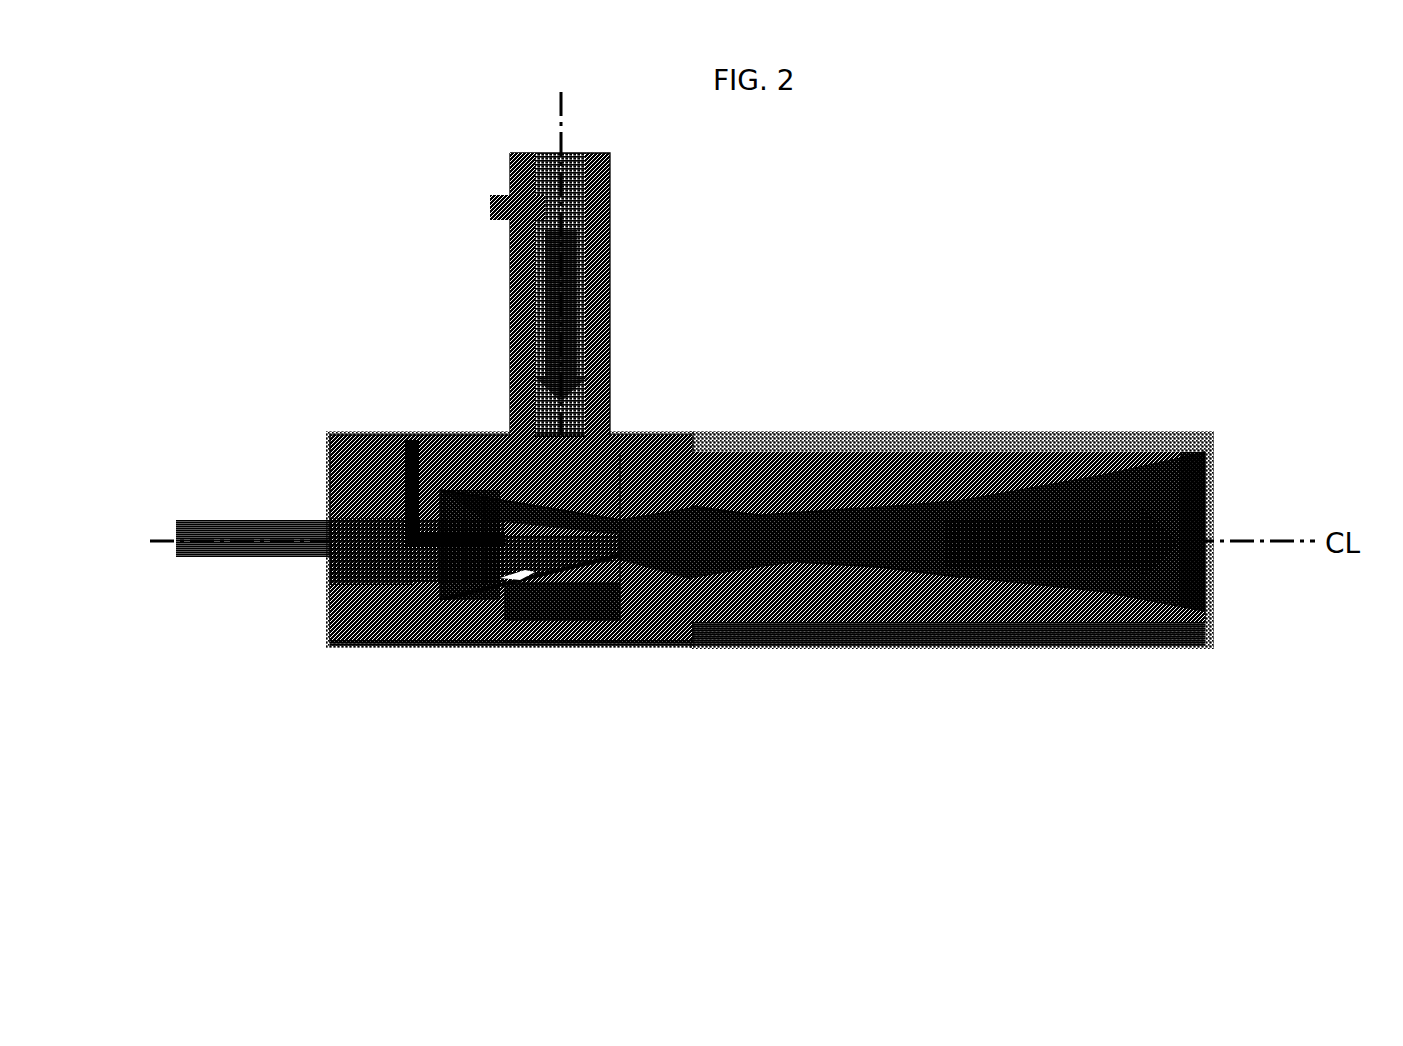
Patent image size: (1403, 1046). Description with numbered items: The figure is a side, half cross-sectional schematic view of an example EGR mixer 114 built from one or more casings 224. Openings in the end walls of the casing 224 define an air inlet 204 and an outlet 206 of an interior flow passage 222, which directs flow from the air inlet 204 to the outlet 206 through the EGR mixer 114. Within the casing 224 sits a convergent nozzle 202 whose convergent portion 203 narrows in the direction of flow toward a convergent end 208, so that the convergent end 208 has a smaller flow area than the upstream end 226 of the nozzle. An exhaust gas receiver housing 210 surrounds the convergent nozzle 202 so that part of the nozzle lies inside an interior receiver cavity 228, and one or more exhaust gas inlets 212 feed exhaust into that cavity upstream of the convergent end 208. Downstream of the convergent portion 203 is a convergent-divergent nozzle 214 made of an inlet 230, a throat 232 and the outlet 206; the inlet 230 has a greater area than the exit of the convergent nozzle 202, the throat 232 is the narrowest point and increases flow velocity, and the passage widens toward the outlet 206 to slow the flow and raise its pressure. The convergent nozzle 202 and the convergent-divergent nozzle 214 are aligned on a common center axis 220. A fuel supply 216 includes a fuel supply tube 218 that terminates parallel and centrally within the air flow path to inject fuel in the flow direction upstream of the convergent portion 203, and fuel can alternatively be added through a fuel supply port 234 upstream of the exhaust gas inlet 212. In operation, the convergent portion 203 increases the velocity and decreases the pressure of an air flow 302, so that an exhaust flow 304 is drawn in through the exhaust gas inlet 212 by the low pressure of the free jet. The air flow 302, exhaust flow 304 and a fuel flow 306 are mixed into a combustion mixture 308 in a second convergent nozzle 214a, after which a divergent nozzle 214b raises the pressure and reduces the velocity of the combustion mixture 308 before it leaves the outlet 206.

The EGR mixer 114 is at (840, 285).
The convergent nozzle 202 is at (492, 645).
The convergent portion 203 is at (450, 438).
The air inlet 204 is at (327, 577).
The outlet 206 is at (1205, 590).
The convergent end 208 is at (607, 645).
The exhaust gas receiver housing 210 is at (543, 645).
The exhaust gas inlet 212 is at (510, 372).
The convergent-divergent nozzle 214 is at (892, 645).
The second convergent nozzle 214a is at (740, 645).
The divergent nozzle 214b is at (1112, 645).
The fuel supply 216 is at (350, 438).
The fuel supply tube 218 is at (398, 645).
The center axis 220 is at (1255, 528).
The interior flow passage 222 is at (418, 566).
The casing 224 is at (620, 645).
The upstream end 226 is at (433, 645).
The interior receiver cavity 228 is at (604, 498).
The inlet 230 is at (643, 645).
The throat 232 is at (765, 513).
The fuel supply port 234 is at (490, 205).
The air flow 302 is at (266, 526).
The exhaust flow 304 is at (612, 295).
The fuel flow 306 is at (700, 430).
The combustion mixture 308 is at (1078, 495).